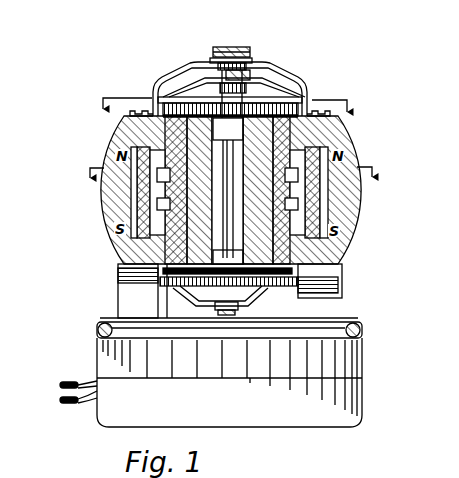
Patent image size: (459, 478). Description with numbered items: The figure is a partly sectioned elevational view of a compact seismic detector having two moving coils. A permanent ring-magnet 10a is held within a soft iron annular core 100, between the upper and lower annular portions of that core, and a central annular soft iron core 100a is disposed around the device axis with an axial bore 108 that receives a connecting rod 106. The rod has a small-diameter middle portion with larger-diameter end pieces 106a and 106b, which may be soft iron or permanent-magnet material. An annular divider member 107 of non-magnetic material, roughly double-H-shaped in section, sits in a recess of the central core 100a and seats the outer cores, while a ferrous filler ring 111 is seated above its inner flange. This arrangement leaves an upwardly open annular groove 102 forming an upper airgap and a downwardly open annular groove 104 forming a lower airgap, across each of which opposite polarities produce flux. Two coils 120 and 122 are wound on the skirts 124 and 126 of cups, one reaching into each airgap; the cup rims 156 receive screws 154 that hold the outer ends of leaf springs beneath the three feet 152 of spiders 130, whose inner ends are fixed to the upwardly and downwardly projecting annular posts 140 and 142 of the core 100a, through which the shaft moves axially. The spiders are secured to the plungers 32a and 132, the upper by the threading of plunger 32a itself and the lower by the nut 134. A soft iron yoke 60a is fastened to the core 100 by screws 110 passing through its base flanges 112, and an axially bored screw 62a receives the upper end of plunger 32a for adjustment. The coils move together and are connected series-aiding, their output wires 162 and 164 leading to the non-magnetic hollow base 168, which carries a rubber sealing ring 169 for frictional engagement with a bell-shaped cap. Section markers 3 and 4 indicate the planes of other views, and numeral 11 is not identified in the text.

The axially bored screw 62a is at (247, 50).
The plunger 32a is at (240, 68).
The soft iron yoke 60a is at (278, 67).
The spider 130 is at (306, 73).
The coil 120 is at (300, 85).
The rim of coil cup 156 is at (316, 108).
The upwardly open annular groove 102 is at (345, 122).
The soft iron annular core 100 is at (352, 135).
The cup skirt 124 is at (292, 150).
The section line 3- 3 is at (231, 164).
The section line 4- 4 is at (226, 109).
The permanent ring-magnet 10a is at (356, 196).
The connecting rod 106 is at (356, 207).
The downwardly open annular groove 104 is at (340, 252).
The cup skirt 126 is at (343, 262).
The plunger 132 is at (300, 298).
The rubber sealing ring 169 is at (362, 331).
The hollow base 168 is at (362, 361).
The nut 134 is at (248, 312).
The axial bore 108 is at (243, 224).
The downwardly projecting annular post 142 is at (276, 191).
The upwardly projecting annular post 140 is at (280, 150).
The spider feet 152 is at (178, 95).
The screws 154 is at (263, 90).
The upper end piece 106a is at (193, 107).
The screws 110 is at (125, 116).
The base fingers or flanges 112 is at (125, 125).
The ferrous filler ring 111 is at (135, 138).
The annular divider member 107 is at (150, 192).
The central annular soft iron core 100a is at (120, 258).
The coil 122 is at (120, 284).
The lower end piece 106b is at (187, 284).
The output wire 162 is at (80, 385).
The output wire 164 is at (73, 403).
The mount 11 is at (451, 195).